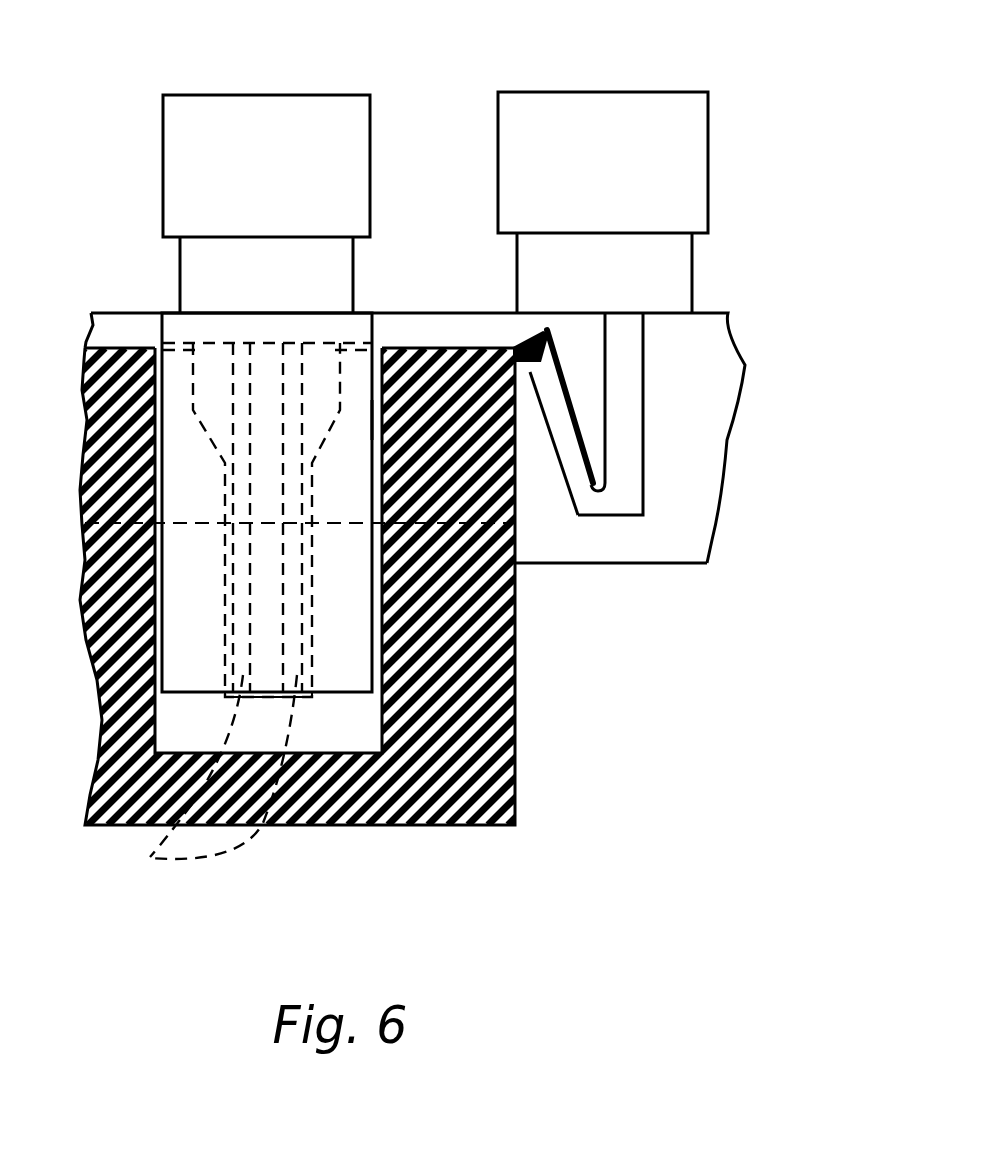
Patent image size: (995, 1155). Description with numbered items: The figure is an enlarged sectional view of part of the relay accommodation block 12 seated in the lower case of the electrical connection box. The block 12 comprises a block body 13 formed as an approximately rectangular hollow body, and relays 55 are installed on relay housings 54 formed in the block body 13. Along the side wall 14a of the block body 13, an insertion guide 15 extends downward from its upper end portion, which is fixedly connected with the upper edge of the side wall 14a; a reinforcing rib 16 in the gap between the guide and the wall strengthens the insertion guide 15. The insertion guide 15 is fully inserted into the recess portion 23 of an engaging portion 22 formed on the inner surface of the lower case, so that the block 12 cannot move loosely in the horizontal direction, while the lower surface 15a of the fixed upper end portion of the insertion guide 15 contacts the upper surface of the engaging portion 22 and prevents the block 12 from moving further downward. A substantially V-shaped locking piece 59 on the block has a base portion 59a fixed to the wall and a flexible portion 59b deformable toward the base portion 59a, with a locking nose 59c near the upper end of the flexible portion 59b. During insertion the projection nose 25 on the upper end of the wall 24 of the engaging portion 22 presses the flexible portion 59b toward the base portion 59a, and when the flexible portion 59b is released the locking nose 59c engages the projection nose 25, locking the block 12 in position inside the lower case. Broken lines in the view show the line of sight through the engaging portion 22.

The relay accommodation block 12 is at (436, 157).
The block body 13 is at (708, 312).
The side wall 14a is at (662, 555).
The insertion guide 15 is at (347, 678).
The lower surface of the fixed upper end portion 15a is at (325, 348).
The reinforcing rib 16 is at (204, 780).
The engaging portion 22 is at (497, 757).
The recess portion 23 is at (372, 415).
The wall 24 is at (515, 694).
The projection nose 25 is at (535, 342).
The relay housing 54 is at (187, 262).
The relay 55 is at (175, 125).
The locking piece 59 is at (649, 437).
The base portion 59a is at (628, 390).
The flexible portion 59b is at (573, 453).
The locking nose 59c is at (524, 372).